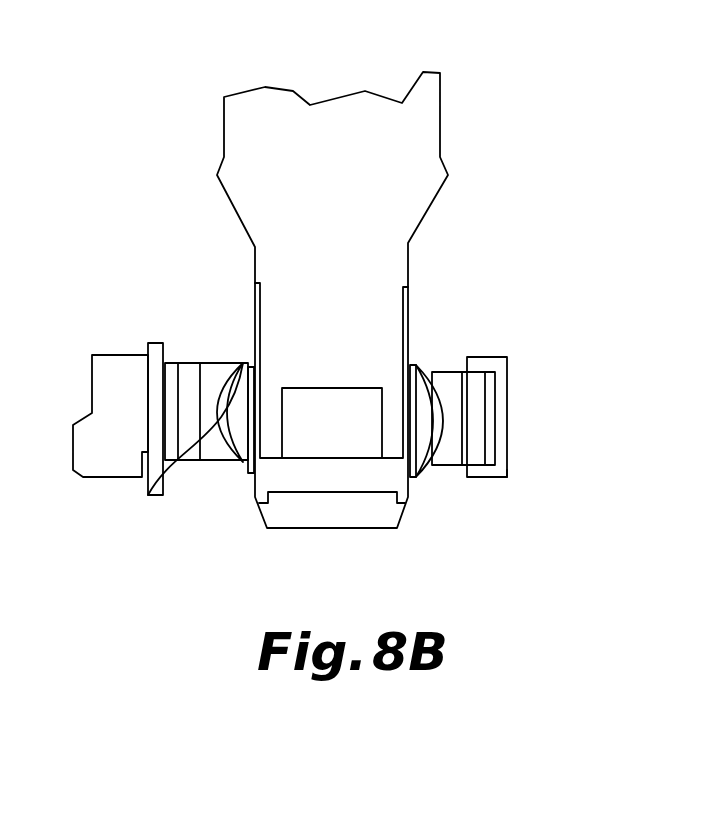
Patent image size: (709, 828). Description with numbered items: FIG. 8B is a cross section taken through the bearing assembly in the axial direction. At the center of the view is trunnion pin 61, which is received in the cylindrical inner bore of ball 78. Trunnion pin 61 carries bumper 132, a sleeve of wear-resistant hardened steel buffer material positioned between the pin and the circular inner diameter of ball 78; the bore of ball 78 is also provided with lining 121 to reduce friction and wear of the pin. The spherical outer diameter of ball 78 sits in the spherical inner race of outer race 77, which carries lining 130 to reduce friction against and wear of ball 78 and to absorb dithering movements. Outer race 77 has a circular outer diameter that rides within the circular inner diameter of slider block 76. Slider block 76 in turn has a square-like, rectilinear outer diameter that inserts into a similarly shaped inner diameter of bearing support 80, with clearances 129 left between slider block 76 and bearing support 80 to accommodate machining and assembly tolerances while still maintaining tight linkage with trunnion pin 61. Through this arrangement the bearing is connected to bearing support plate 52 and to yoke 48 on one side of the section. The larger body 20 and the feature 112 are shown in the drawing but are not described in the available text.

The body 20 is at (427, 152).
The yoke 48 is at (131, 432).
The bearing support plate 52 is at (158, 358).
The trunnion pin 61 is at (372, 305).
The slider block 76 is at (193, 377).
The outer race 77 is at (213, 460).
The ball 78 is at (250, 363).
The bearing support 80 is at (528, 452).
The plate 112 is at (507, 467).
The lining 121 is at (150, 487).
The clearances 129 is at (173, 377).
The lining 130 is at (231, 463).
The bumper 132 is at (412, 348).